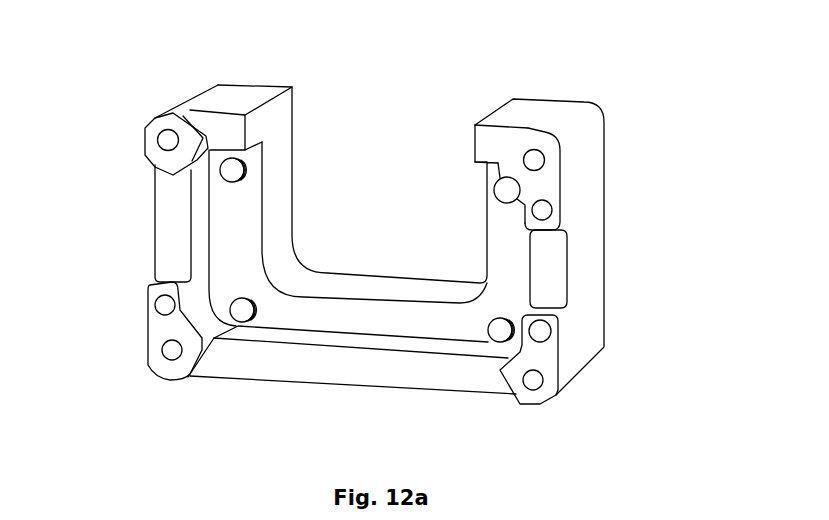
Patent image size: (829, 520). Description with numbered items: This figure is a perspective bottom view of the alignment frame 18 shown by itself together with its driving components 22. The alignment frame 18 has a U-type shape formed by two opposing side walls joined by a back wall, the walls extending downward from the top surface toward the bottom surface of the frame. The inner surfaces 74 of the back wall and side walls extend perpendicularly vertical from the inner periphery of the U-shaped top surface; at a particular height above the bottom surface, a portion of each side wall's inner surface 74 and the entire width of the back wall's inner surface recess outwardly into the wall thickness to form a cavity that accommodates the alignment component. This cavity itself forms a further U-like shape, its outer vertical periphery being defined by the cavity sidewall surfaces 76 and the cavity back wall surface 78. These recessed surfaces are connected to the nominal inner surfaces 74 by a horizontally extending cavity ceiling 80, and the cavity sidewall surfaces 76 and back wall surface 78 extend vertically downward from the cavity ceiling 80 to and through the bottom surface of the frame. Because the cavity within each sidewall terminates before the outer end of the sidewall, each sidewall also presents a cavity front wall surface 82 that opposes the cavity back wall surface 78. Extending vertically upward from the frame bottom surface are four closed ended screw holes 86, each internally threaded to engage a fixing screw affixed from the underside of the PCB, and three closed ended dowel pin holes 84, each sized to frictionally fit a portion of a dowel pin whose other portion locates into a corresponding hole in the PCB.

The alignment frame 18 is at (607, 210).
The driving components 22 is at (241, 326).
The inner surfaces 74 is at (277, 128).
The cavity sidewall surfaces 76 is at (196, 225).
The cavity back wall surface 78 is at (298, 338).
The cavity ceiling 80 is at (224, 217).
The cavity front wall surfaces 82 is at (231, 146).
The closed ended dowel pin holes 84 is at (159, 296).
The closed ended screw holes 86 is at (160, 132).